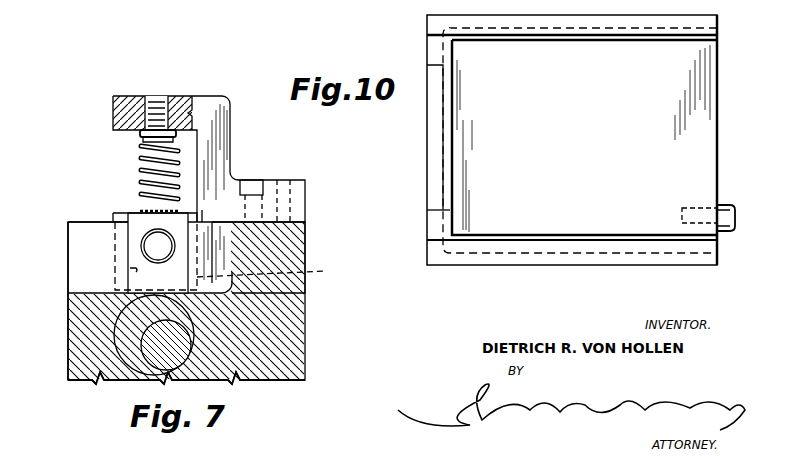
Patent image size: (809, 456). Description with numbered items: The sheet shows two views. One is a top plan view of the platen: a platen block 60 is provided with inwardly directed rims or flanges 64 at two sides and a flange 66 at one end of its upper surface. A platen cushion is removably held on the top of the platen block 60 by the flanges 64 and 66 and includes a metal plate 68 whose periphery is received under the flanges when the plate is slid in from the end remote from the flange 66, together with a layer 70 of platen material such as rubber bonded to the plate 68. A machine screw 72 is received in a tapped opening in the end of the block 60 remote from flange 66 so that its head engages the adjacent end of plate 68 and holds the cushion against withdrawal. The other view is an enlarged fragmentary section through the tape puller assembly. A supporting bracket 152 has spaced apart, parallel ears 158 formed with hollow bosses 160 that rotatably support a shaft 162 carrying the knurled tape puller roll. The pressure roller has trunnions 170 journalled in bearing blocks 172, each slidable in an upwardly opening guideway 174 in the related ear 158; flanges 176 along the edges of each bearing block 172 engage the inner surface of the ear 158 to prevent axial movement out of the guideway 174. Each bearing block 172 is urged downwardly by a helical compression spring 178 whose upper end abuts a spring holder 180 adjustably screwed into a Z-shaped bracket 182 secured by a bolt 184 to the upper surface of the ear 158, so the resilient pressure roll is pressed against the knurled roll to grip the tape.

In FIG. 7, the supporting bracket 152 is at (305, 259).
In FIG. 7, the ears 158 is at (87, 308).
In FIG. 7, the hollow bosses 160 is at (127, 333).
In FIG. 7, the shaft 162 is at (150, 343).
In FIG. 7, the trunnions 170 is at (147, 251).
In FIG. 7, the bearing blocks 172 is at (133, 214).
In FIG. 7, the guideway 174 is at (132, 269).
In FIG. 7, the flanges 176 is at (122, 217).
In FIG. 7, the helical compression spring 178 is at (140, 163).
In FIG. 7, the spring holder 180 is at (143, 141).
In FIG. 7, the Z-shaped bracket 182 is at (223, 153).
In FIG. 7, the bolt 184 is at (245, 180).
In FIG. 10, the platen block 60 is at (648, 17).
In FIG. 10, the flanges 64 is at (563, 26).
In FIG. 10, the flange 66 is at (432, 152).
In FIG. 10, the metal plate 68 is at (447, 210).
In FIG. 10, the layer of platen material 70 is at (710, 93).
In FIG. 10, the machine screw 72 is at (722, 210).